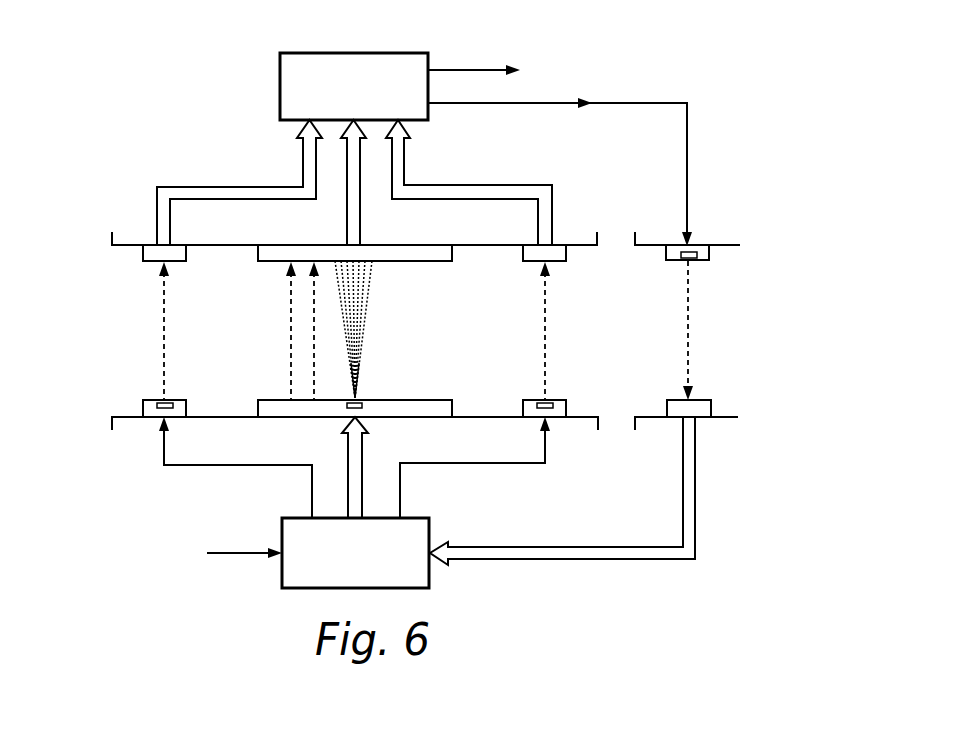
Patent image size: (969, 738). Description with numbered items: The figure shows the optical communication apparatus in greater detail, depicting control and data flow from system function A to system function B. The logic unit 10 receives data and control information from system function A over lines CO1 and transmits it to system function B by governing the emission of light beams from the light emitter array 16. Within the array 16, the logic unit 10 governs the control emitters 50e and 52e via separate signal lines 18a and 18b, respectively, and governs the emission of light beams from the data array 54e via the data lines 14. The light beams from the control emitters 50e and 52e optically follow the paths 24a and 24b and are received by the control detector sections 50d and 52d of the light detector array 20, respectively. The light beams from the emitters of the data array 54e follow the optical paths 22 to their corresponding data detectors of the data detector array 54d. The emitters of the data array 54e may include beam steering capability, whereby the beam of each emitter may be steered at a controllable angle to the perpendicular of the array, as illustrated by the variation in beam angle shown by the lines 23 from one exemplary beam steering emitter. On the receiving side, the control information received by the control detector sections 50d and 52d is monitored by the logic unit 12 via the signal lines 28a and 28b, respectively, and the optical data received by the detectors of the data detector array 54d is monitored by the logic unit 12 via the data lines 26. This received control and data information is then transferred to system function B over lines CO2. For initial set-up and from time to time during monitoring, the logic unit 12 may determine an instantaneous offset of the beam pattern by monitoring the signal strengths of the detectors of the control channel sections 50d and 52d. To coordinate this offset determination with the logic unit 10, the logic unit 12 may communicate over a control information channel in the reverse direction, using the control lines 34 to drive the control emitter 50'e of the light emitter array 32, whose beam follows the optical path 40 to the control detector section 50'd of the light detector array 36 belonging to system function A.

The control logic block 10 is at (282, 532).
The control logic block 12 is at (280, 92).
The data lines 14 is at (362, 476).
The light emitter array 16 is at (78, 417).
The signal line 18a is at (192, 465).
The signal line 18b is at (507, 463).
The light detector array 20 is at (78, 232).
The optical paths 22 is at (314, 324).
The beam angle variation lines 23 is at (362, 352).
The optical path 24a is at (164, 342).
The optical path 24b is at (545, 335).
The data lines 26 is at (345, 186).
The signal line 28a is at (228, 186).
The signal line 28b is at (466, 185).
The light emitter array 32 is at (755, 233).
The control lines 34 is at (651, 103).
The light detector array 36 is at (758, 435).
The optical paths 40 is at (690, 343).
The control detector section 50d is at (143, 253).
The control emitter 50e is at (188, 405).
The control detector section 50'd is at (725, 388).
The control emitter 50'e is at (720, 274).
The control detector section 52d is at (567, 250).
The control emitter 52e is at (572, 402).
The data detector array 54d is at (433, 262).
The data array 54e is at (432, 400).
The lines CO1 is at (232, 556).
The lines CO2 is at (468, 70).